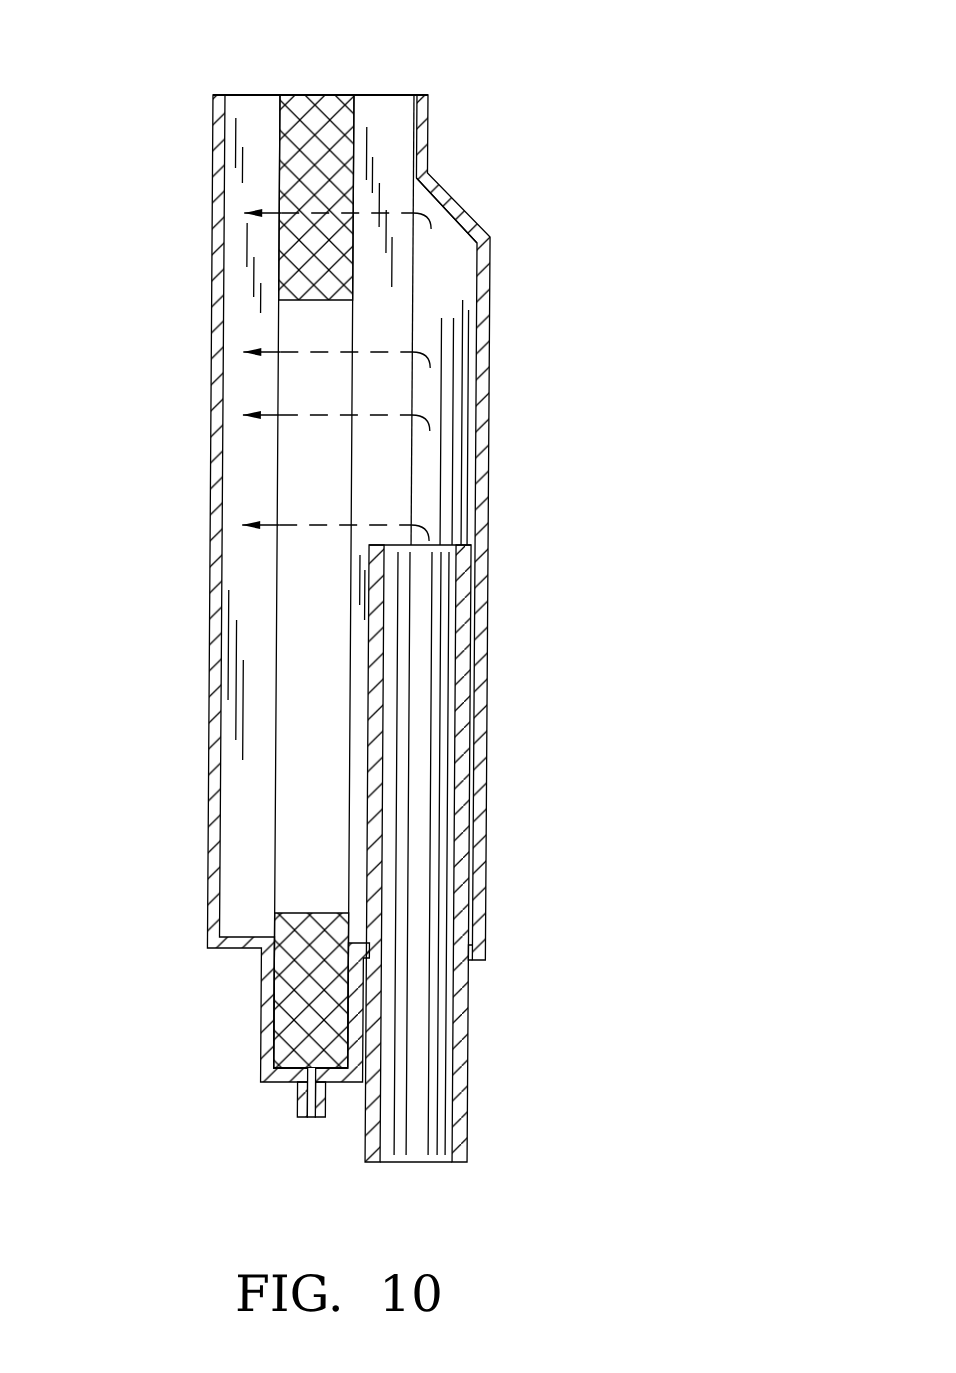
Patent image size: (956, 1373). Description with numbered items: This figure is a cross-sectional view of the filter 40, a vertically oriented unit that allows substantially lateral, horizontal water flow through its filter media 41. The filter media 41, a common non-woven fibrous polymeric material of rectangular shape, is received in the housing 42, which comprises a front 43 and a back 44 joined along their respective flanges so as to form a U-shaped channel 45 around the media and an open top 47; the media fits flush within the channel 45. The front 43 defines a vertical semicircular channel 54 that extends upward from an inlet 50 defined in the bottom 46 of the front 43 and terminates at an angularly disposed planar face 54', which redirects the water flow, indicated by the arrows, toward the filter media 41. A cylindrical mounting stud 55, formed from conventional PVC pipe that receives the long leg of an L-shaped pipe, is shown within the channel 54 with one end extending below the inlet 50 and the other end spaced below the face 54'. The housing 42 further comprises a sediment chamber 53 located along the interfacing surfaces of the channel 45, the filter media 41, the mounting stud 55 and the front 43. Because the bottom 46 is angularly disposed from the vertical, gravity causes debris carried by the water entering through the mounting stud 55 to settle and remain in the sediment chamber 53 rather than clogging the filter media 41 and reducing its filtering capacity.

The filter 40 is at (421, 585).
The filter media 41 is at (329, 389).
The housing 42 is at (146, 295).
The front 43 is at (480, 300).
The back 44 is at (209, 675).
The channel 45 is at (282, 1068).
The bottom 46 is at (360, 937).
The open top 47 is at (379, 90).
The inlet 50 is at (473, 961).
The sediment chamber 53 is at (380, 428).
The vertical semicircular channel 54 is at (487, 422).
The angularly disposed planar face 54' is at (447, 241).
The cylindrical mounting stud 55 is at (463, 1080).